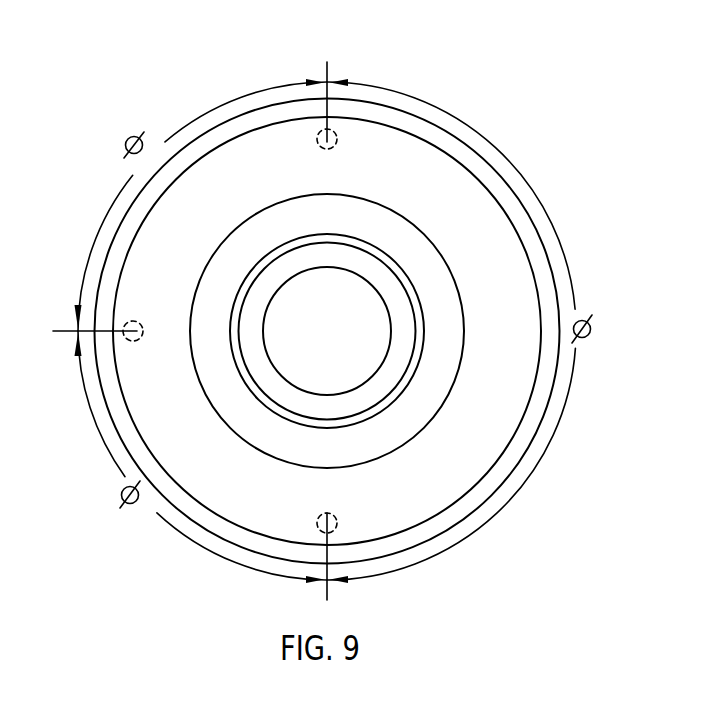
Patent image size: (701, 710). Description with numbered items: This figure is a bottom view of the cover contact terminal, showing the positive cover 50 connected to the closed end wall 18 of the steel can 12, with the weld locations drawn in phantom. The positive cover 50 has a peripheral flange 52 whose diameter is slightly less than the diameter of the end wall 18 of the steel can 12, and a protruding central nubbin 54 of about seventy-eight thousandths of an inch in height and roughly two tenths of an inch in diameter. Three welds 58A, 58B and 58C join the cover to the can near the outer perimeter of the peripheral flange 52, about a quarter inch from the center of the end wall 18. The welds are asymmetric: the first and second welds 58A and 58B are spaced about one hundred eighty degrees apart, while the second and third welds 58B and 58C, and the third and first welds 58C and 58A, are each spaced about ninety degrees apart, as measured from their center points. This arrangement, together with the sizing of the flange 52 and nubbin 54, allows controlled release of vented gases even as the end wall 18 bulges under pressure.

The steel can 12 is at (528, 448).
The closed end wall 18 is at (137, 208).
The positive cover 50 is at (393, 128).
The peripheral flange 52 is at (438, 175).
The nubbin 54 is at (347, 302).
The first weld 58A is at (331, 513).
The second weld 58B is at (320, 142).
The third weld 58C is at (140, 336).